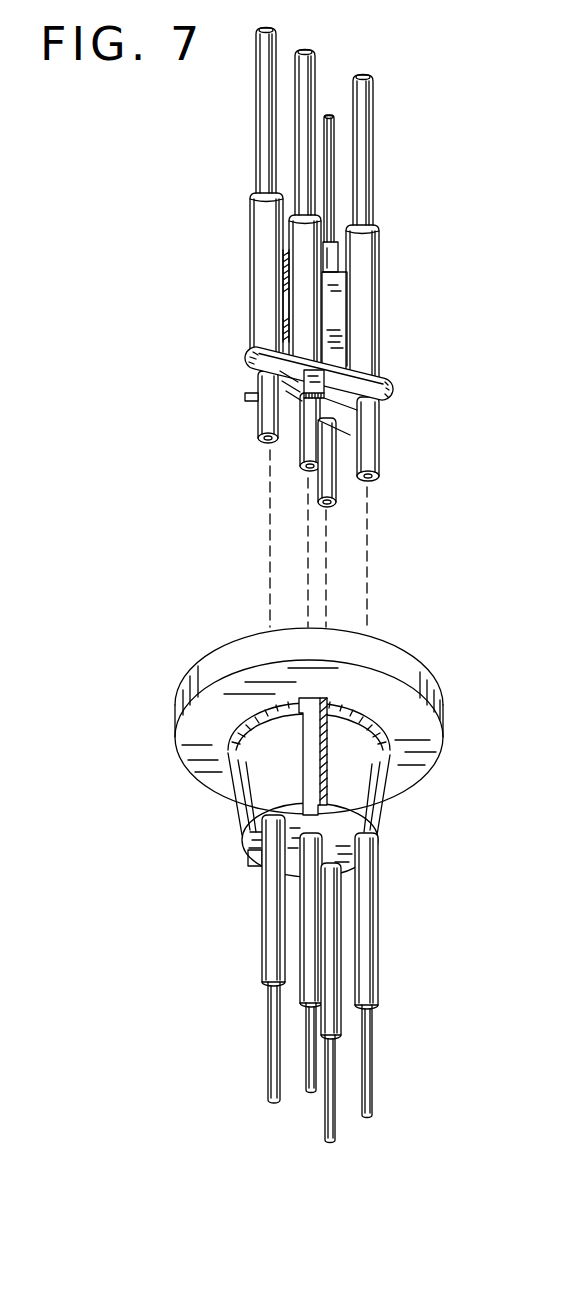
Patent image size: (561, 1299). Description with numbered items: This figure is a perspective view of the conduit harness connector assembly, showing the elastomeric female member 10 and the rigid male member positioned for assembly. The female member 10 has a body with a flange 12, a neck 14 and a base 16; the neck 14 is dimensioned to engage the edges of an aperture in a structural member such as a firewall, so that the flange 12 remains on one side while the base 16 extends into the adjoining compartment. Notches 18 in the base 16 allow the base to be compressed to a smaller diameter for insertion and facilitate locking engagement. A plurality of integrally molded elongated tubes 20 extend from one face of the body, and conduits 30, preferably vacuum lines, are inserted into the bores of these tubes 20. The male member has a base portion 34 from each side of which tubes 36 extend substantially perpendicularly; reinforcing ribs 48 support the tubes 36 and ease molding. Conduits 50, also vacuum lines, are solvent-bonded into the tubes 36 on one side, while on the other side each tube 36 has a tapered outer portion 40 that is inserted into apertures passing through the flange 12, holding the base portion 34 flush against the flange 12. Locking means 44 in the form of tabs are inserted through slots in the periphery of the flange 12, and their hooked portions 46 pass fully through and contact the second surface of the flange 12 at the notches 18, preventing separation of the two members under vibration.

The female member 10 is at (197, 862).
The flange 12 is at (309, 721).
The neck 14 is at (264, 713).
The base 16 is at (298, 768).
The notches 18 is at (317, 752).
The elongated tubes 20 is at (313, 840).
The conduit means 30 is at (311, 1094).
The base portion 34 is at (319, 378).
The tubes 36 is at (297, 288).
The tapered outer portions 40 is at (262, 422).
The locking means 44 is at (251, 383).
The hooked portion 46 is at (247, 397).
The reinforcing ribs 48 is at (338, 304).
The conduits 50 is at (264, 28).